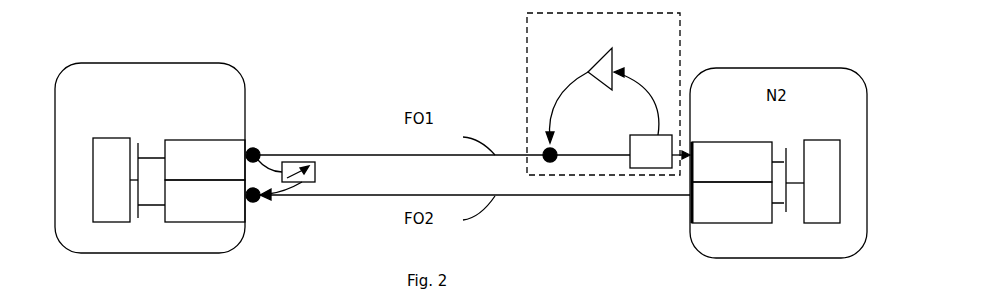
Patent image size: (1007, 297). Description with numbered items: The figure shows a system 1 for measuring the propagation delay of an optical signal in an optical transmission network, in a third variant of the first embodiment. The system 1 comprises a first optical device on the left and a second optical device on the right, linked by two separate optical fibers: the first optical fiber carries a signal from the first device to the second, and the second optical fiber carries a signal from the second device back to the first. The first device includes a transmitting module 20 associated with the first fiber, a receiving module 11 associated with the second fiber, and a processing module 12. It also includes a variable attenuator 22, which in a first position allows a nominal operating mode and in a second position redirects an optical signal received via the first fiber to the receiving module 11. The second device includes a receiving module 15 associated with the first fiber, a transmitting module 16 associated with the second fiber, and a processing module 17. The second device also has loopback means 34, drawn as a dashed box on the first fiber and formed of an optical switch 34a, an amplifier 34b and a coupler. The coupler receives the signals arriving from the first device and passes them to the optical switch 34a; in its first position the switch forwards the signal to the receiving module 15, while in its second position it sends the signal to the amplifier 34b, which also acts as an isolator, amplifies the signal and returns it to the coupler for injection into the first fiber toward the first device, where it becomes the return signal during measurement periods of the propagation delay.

The system 1 is at (811, 48).
The receiving module 11 is at (213, 222).
The processing module 12 is at (122, 222).
The receiving module 15 is at (740, 140).
The transmitting module 16 is at (740, 223).
The processing module 17 is at (808, 223).
The transmitting module 20 is at (220, 138).
The variable attenuator 22 is at (315, 168).
The loopback means 34 is at (527, 57).
The optical switch 34a is at (630, 135).
The amplifier 34b is at (595, 62).